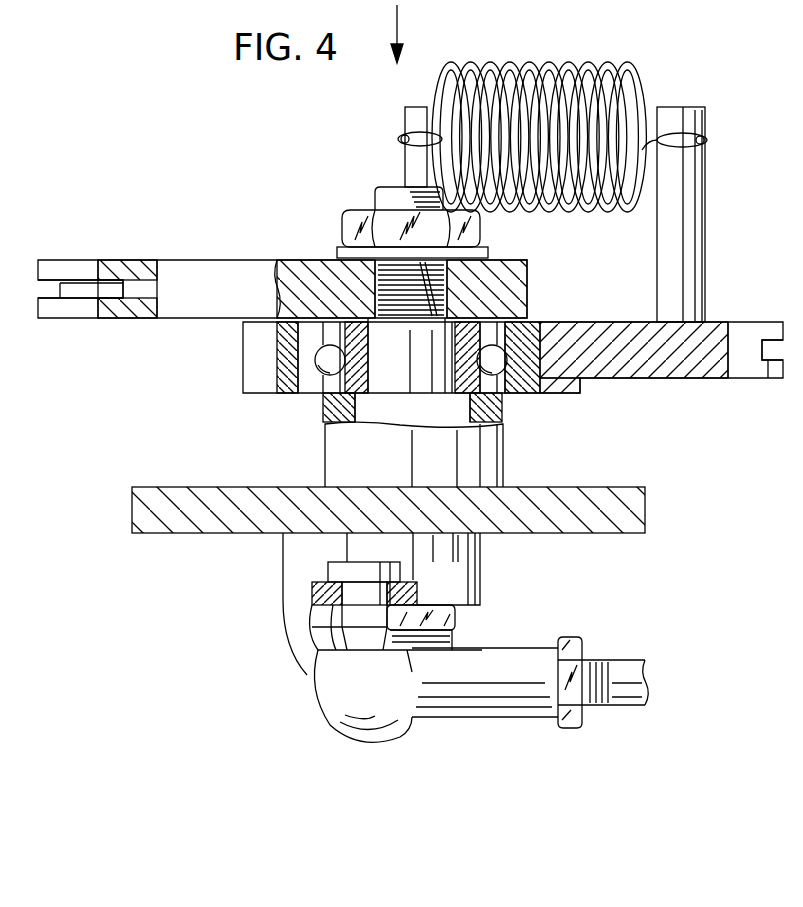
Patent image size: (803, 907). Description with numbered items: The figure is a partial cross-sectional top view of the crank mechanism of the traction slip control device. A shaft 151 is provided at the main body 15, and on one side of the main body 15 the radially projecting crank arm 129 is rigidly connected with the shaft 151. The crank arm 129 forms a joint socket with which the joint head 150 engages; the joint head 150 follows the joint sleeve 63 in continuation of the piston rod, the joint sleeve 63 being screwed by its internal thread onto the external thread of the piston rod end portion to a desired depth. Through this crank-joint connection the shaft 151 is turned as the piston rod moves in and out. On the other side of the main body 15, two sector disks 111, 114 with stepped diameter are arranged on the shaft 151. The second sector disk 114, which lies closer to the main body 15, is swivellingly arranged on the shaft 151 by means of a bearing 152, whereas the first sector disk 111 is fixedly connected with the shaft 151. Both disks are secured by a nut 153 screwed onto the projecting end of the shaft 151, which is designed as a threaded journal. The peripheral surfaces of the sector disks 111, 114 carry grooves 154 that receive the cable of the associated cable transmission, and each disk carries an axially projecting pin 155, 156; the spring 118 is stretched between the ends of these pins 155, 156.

The spring 118 is at (631, 66).
The pin 155 is at (405, 160).
The nut 153 is at (342, 215).
The first sector disk 111 is at (145, 272).
The grooves 154 is at (50, 290).
The bearing 152 is at (535, 325).
The pin 156 is at (705, 211).
The second sector disk 114 is at (655, 366).
The shaft 151 is at (488, 442).
The main body 15 is at (592, 487).
The crank arm 129 is at (465, 572).
The joint head 150 is at (337, 615).
The joint sleeve 63 is at (487, 700).